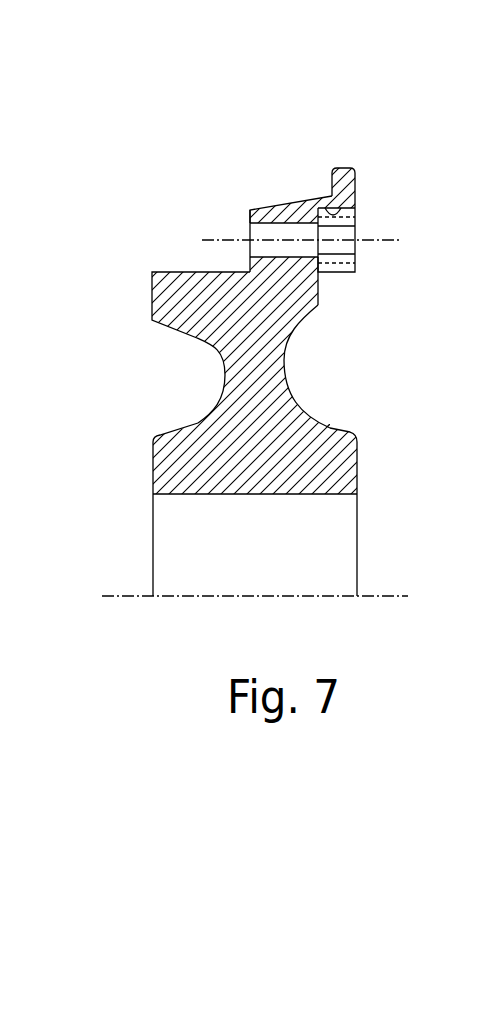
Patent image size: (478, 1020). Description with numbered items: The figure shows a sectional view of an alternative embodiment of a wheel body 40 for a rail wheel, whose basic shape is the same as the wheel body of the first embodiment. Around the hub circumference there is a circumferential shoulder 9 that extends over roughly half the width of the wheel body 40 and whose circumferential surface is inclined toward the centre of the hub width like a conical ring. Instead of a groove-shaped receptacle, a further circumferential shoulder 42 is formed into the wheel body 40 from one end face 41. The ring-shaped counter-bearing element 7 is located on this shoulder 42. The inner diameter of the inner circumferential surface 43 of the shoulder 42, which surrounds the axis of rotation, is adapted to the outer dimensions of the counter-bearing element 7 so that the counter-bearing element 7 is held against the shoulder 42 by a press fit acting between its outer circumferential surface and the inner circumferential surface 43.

The counter-bearing element 7 is at (357, 220).
The circumferential shoulder 9 is at (298, 207).
The wheel body 40 is at (258, 301).
The end face 41 is at (406, 396).
The circumferential shoulder 42 is at (341, 292).
The inner circumferential surface 43 is at (325, 210).